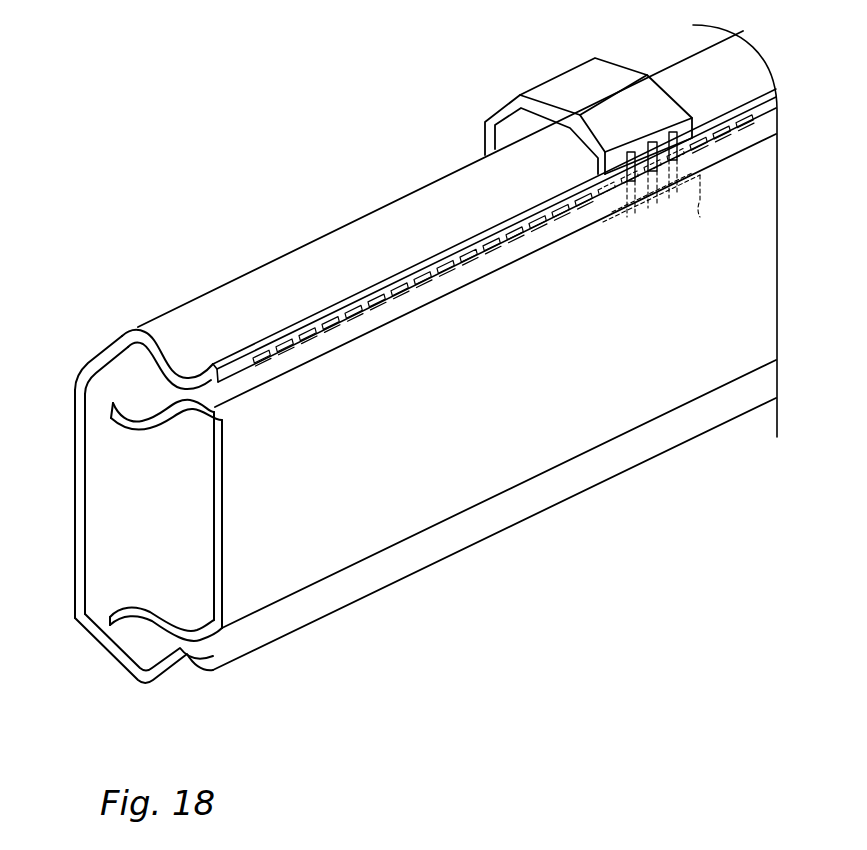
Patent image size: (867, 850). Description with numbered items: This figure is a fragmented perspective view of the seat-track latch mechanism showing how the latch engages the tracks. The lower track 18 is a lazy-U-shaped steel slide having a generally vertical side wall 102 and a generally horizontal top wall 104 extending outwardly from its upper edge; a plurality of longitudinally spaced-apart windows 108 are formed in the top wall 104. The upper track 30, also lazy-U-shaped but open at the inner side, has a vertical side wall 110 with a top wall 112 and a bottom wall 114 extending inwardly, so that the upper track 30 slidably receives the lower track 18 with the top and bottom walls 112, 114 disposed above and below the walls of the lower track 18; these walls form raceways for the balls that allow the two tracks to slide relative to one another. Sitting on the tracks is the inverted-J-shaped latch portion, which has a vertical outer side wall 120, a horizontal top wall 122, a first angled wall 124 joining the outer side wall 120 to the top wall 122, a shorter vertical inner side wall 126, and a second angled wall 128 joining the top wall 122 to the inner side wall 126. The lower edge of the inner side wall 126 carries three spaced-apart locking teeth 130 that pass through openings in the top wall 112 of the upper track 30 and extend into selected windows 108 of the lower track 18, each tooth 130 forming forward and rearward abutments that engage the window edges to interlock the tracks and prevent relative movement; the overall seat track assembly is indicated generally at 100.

The rail assembly 100 is at (492, 631).
The side wall 102 is at (243, 547).
The top wall 104 is at (170, 403).
The windows 108 is at (505, 250).
The side wall 110 is at (76, 478).
The top wall 112 is at (113, 342).
The bottom wall 114 is at (130, 678).
The lower track 18 is at (218, 622).
The upper track 30 is at (135, 324).
The outer side wall 120 is at (483, 145).
The top wall 122 is at (588, 82).
The first angled wall 124 is at (505, 102).
The inner side wall 126 is at (690, 143).
The second angled wall 128 is at (650, 105).
The locking teeth 130 is at (647, 200).